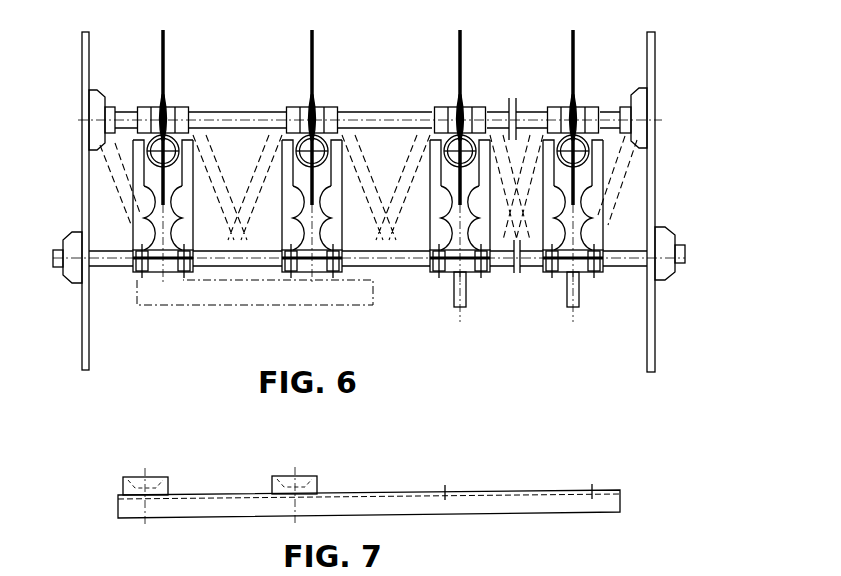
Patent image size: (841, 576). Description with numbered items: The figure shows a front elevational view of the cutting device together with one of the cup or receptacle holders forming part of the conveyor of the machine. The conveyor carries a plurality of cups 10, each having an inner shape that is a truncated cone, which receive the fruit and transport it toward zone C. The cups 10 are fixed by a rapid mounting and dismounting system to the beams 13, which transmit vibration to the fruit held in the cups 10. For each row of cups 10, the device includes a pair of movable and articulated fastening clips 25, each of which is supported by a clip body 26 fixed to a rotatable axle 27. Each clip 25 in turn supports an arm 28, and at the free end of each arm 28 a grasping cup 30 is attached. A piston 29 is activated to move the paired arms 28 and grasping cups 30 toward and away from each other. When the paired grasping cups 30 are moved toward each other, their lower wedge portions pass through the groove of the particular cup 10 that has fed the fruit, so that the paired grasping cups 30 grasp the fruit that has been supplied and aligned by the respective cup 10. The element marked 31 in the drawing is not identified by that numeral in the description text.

In FIG. 7, the cup 10 is at (172, 482).
In FIG. 7, the beam 13 is at (413, 505).
In FIG. 6, the fastening clip 25 is at (186, 210).
In FIG. 6, the clip body 26 is at (147, 232).
In FIG. 6, the rotatable axle 27 is at (247, 258).
In FIG. 6, the arm 28 is at (188, 186).
In FIG. 6, the piston 29 is at (582, 312).
In FIG. 6, the grasping cup 30 is at (190, 113).
In FIG. 6, the needle 31 is at (165, 50).
In FIG. 6, the zone C is at (368, 126).